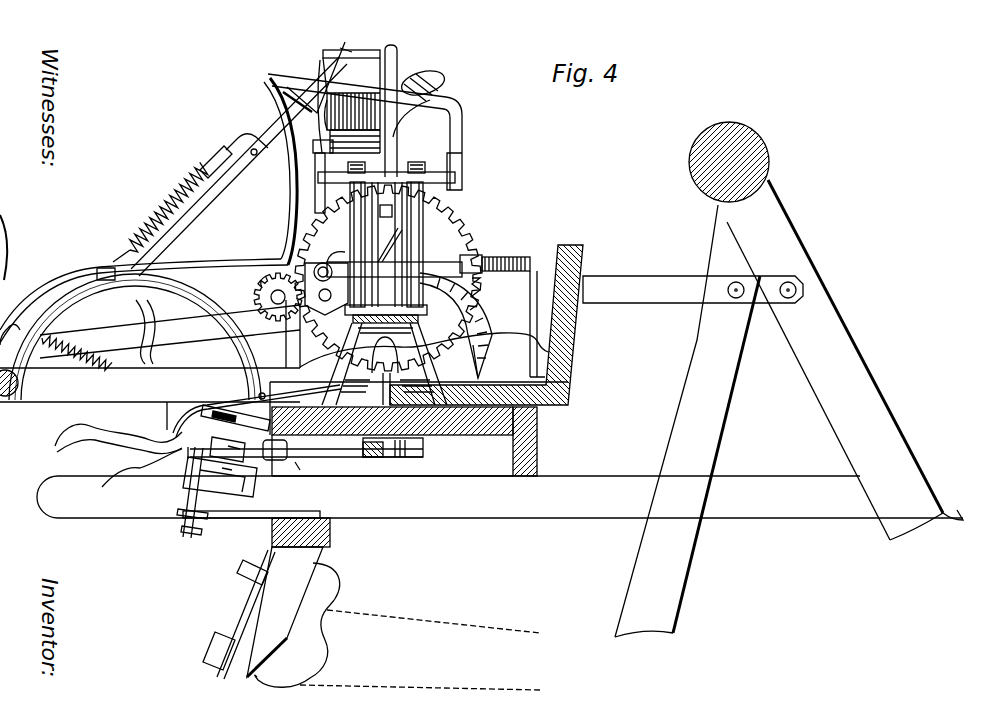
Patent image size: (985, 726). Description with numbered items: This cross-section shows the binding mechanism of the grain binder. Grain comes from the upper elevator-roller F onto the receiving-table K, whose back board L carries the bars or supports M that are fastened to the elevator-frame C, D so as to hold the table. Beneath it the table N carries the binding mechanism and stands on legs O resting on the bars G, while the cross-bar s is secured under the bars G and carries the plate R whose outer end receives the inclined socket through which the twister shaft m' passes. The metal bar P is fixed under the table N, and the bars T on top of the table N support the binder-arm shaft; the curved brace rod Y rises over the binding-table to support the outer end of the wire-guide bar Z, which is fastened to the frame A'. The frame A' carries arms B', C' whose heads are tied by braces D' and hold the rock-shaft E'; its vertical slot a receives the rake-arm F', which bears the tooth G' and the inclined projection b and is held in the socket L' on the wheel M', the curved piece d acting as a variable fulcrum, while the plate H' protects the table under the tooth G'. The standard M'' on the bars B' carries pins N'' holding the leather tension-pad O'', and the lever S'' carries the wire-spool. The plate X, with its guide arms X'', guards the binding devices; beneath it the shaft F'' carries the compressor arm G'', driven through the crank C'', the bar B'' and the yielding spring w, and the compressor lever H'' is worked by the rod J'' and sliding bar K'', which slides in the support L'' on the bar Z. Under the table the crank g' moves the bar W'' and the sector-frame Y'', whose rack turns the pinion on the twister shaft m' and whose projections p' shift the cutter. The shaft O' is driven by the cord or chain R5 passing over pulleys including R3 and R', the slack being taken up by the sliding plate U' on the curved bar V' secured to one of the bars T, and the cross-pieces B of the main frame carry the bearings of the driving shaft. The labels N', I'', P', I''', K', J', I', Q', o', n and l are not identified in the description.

The upper elevator-roller F is at (736, 162).
The bars or supports M is at (693, 289).
The elevator-frame D is at (687, 421).
The elevator-frame C is at (845, 360).
The bars G is at (500, 497).
The cross-bar s is at (309, 532).
The back board L is at (497, 325).
The table N is at (419, 408).
The receiving-table K is at (538, 441).
The legs or supports O is at (392, 455).
The bars T is at (150, 399).
The brace rod or bar Y is at (144, 241).
The support L'' is at (267, 171).
The bar B'' is at (170, 331).
The compressor arm or lever H'' is at (155, 332).
The coiled spring w is at (77, 353).
The crank C'' is at (10, 332).
The upright N' is at (276, 334).
The sliding bar K'' is at (239, 166).
The bar or rod J'' is at (199, 193).
The spring block I'' is at (109, 265).
The bar Z is at (375, 116).
The tension-pad O'' is at (349, 101).
The spool body P' is at (316, 115).
The spindles or pins N'' is at (339, 89).
The standard M'' is at (404, 106).
The coil I''' is at (423, 72).
The lever S'' is at (411, 118).
The tie-rods or braces D' is at (388, 278).
The frame A' is at (312, 183).
The cross-pieces B is at (386, 170).
The arm B' is at (396, 165).
The rock-shaft E' is at (386, 252).
The vertical slot a is at (386, 211).
The projection b is at (390, 245).
The wheel M' is at (328, 248).
The rake-arm F' is at (398, 268).
The threaded rod K' is at (501, 276).
The tooth or arm G' is at (530, 324).
The socket L' is at (325, 289).
The curved segment J' is at (456, 325).
The metal plate H' is at (491, 366).
The belt I' is at (424, 342).
The arm C' is at (384, 364).
The pulley R' is at (272, 297).
The pivot Q' is at (282, 305).
The shaft O' is at (240, 288).
The plate X is at (257, 411).
The pivot o' is at (252, 386).
The shaft F'' is at (226, 422).
The metal bar P is at (266, 448).
The compressor arm or lever G'' is at (118, 455).
The arms X'' is at (204, 450).
The pin n is at (235, 444).
The pin l is at (227, 469).
The metal plate or support R is at (223, 481).
The curved piece of metal d is at (190, 492).
The twister shaft m' is at (191, 537).
The projections p' is at (303, 479).
The sector-frame Y'' is at (305, 461).
The bar W'' is at (380, 446).
The crank g' is at (382, 463).
The curved metal bar V' is at (253, 595).
The sliding plate U' is at (297, 625).
The pulley R3 is at (430, 642).
The cord or chain R5 is at (420, 678).